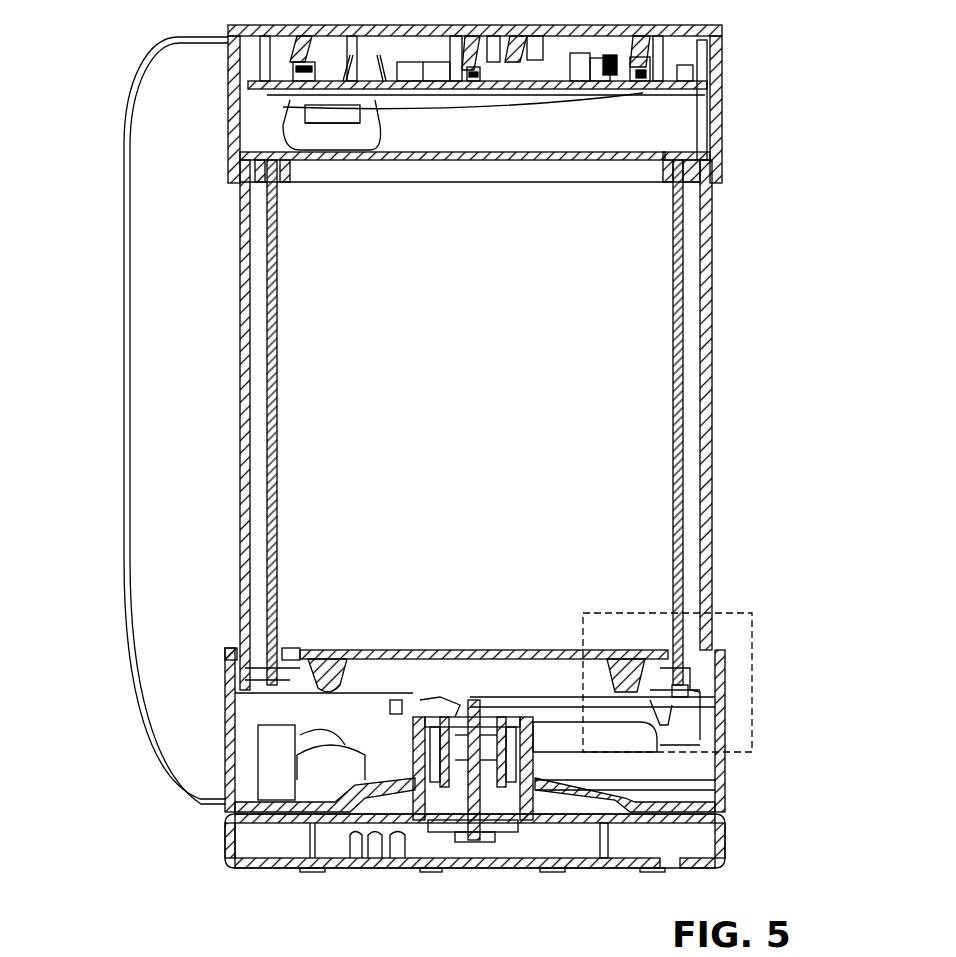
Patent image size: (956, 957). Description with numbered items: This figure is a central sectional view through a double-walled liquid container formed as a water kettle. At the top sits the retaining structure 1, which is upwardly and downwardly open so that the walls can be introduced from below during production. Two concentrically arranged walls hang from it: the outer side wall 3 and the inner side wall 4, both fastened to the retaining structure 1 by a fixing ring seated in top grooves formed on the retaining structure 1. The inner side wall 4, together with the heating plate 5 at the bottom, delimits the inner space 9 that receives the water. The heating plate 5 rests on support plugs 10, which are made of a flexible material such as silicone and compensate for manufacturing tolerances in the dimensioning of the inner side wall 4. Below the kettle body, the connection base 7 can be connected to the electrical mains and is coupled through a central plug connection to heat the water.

The retaining structure 1 is at (740, 140).
The outer side wall 3 is at (706, 354).
The inner side wall 4 is at (680, 453).
The inner space 9 is at (512, 523).
The heating plate 5 is at (352, 638).
The support plugs 10 is at (692, 710).
The connection base 7 is at (733, 842).